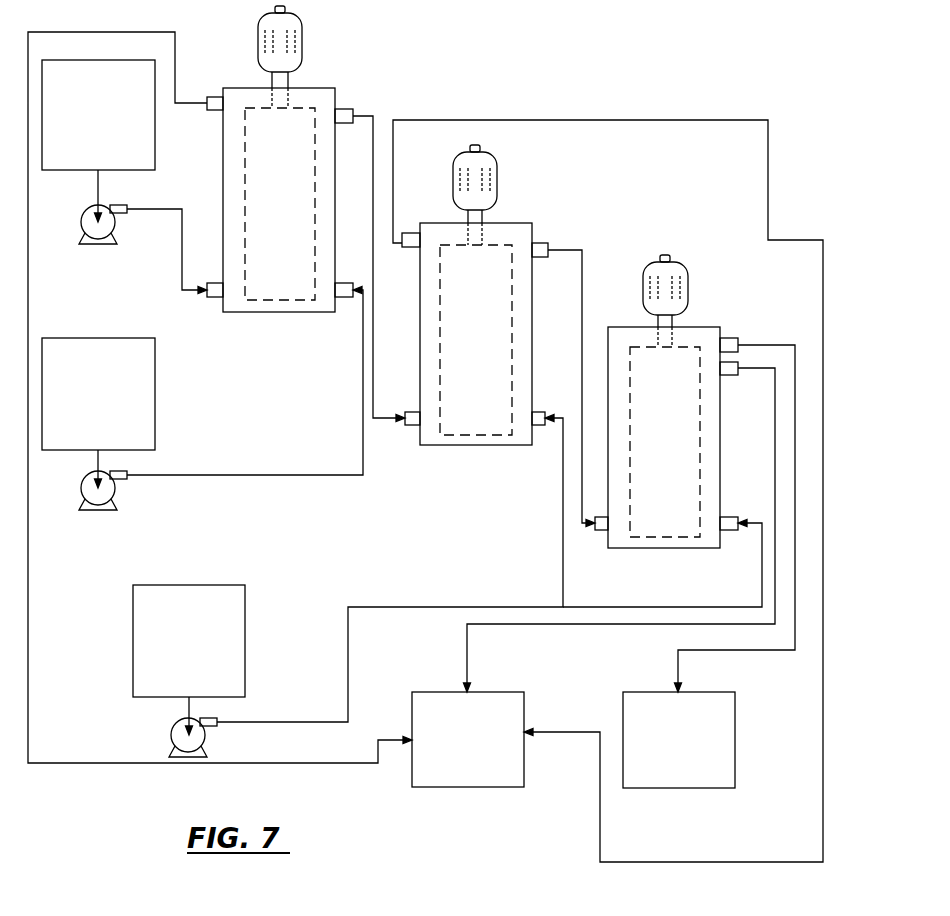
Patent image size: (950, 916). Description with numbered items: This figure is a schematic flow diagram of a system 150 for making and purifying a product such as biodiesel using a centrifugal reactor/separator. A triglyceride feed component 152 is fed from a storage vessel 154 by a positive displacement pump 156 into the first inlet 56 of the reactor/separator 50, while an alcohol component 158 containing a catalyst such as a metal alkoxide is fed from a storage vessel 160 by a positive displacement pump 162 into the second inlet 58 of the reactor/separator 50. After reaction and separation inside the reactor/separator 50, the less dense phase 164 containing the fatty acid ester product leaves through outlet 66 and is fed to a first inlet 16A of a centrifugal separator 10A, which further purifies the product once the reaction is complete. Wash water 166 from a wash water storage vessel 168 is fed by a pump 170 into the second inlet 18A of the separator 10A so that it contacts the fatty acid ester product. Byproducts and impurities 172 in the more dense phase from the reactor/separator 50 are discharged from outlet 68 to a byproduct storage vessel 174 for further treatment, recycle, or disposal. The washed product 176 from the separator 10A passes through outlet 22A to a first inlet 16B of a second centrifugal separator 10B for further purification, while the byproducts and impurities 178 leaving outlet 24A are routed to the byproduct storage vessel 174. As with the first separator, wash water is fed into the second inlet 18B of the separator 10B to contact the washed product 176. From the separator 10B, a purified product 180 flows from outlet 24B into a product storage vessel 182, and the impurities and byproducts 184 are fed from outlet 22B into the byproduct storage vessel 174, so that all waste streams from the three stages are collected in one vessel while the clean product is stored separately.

The system 150 is at (657, 102).
The storage vessel 154 is at (119, 126).
The positive displacement pump 156 is at (95, 228).
The triglyceride feed component 152 is at (182, 243).
The outlet 68 is at (205, 104).
The reactor/separator 50 is at (294, 209).
The outlet 66 is at (345, 122).
The less dense phase 164 is at (364, 114).
The second inlet 58 is at (217, 298).
The first inlet 56 is at (345, 300).
The storage vessel 160 is at (119, 406).
The positive displacement pump 162 is at (90, 490).
The alcohol component 158 is at (258, 474).
The byproducts and impurities 172 is at (30, 612).
The wash water storage vessel 168 is at (210, 651).
The pump 170 is at (180, 735).
The wash water 166 is at (563, 566).
The byproducts and impurities 178 is at (789, 239).
The centrifugal separator 10A is at (497, 346).
The outlet 24A is at (410, 232).
The outlet 22A is at (541, 254).
The first inlet 16A is at (410, 427).
The second inlet 18A is at (540, 410).
The washed product 176 is at (583, 287).
The centrifugal separator 10B is at (684, 451).
The outlet 24B is at (735, 337).
The outlet 22B is at (733, 376).
The first inlet 16B is at (601, 532).
The second inlet 18B is at (730, 532).
The purified product 180 is at (718, 652).
The impurities and byproducts 184 is at (596, 626).
The byproduct storage vessel 174 is at (488, 752).
The product storage vessel 182 is at (699, 752).